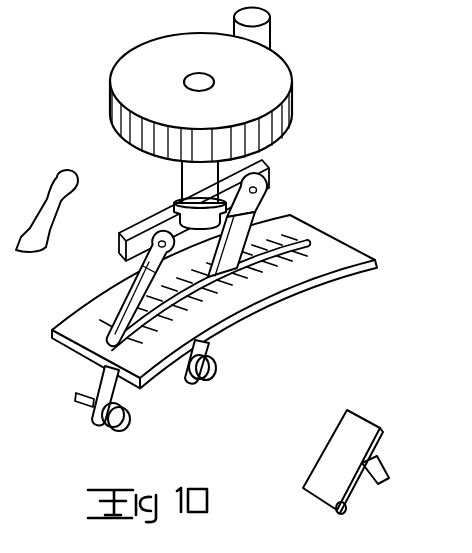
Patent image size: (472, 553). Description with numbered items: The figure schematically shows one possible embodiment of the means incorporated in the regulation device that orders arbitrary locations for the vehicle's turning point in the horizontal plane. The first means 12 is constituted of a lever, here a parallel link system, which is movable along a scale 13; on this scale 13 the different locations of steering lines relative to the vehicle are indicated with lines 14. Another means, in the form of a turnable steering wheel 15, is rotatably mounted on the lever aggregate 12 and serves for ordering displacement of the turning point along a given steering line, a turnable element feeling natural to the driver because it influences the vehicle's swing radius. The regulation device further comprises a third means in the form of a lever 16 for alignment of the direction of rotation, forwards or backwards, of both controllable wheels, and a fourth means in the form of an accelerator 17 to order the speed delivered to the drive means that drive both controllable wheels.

The first means 12 is at (212, 341).
The scale 13 is at (268, 273).
The lines 14 is at (156, 310).
The turnable steering wheel 15 is at (268, 96).
The lever 16 is at (50, 187).
The accelerator 17 is at (330, 447).